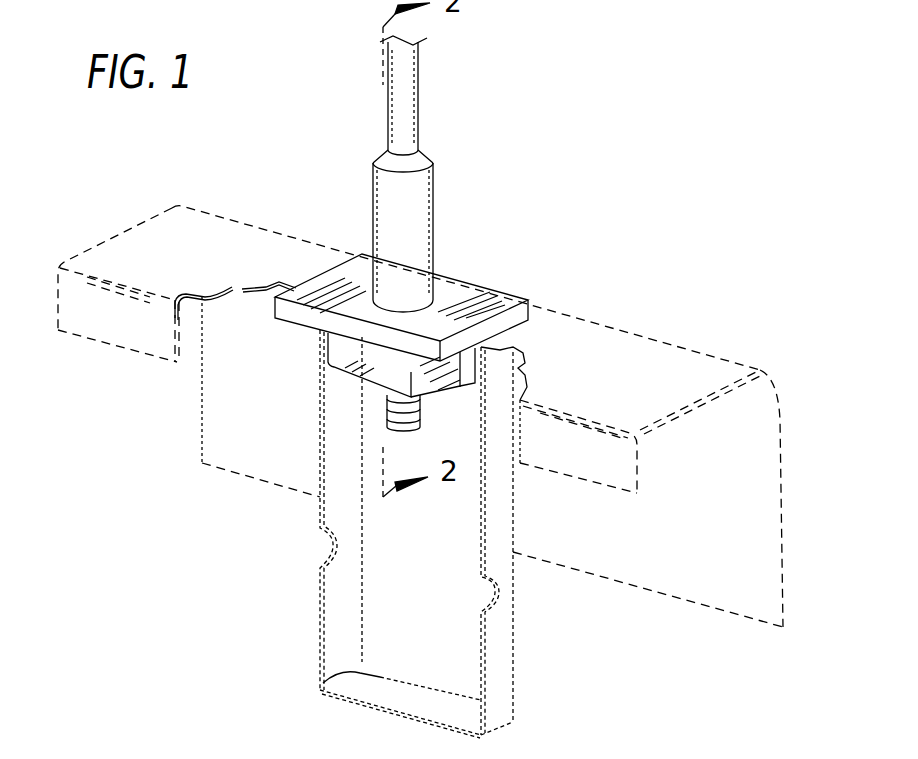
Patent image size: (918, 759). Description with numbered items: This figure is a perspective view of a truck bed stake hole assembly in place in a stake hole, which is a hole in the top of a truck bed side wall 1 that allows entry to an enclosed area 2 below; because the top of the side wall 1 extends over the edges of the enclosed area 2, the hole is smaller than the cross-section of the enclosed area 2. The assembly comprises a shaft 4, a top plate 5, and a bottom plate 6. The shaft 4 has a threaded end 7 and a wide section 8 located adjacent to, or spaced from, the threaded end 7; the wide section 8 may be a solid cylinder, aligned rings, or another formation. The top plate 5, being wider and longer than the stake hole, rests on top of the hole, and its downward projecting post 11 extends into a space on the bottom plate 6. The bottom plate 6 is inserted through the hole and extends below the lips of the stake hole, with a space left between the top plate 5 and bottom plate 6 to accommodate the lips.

The truck bed side wall 1 is at (587, 363).
The enclosed area 2 is at (453, 668).
The shaft 4 is at (417, 113).
The top plate 5 is at (450, 290).
The bottom plate 6 is at (427, 387).
The threaded end 7 is at (388, 430).
The wide section 8 is at (412, 246).
The downward projecting post 11 is at (470, 357).